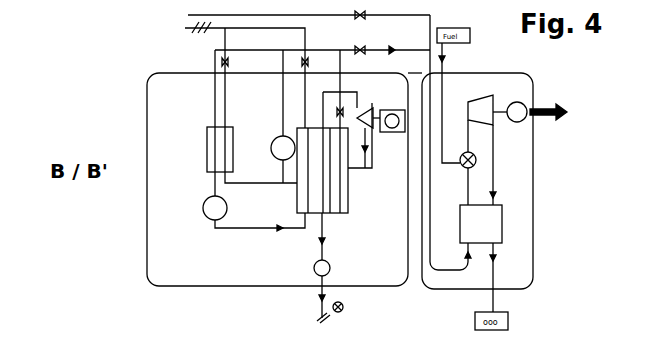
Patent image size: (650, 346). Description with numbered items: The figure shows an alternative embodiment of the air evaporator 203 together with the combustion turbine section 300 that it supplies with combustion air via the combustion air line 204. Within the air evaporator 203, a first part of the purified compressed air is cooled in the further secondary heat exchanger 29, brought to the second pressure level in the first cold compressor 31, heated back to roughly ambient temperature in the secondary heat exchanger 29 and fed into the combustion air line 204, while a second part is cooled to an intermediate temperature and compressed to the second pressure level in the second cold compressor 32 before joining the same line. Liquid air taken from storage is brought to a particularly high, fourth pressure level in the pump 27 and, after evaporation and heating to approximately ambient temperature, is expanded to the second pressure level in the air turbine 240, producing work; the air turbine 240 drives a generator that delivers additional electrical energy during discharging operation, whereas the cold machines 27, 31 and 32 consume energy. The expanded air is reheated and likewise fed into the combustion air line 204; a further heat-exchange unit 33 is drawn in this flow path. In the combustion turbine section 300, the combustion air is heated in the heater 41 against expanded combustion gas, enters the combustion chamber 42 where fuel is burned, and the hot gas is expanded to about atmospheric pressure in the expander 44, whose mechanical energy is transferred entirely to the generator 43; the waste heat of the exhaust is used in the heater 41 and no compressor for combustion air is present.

The air evaporator 203 is at (244, 287).
The combustion air line 204 is at (428, 55).
The gas turbine unit 300 is at (507, 72).
The air turbine 240 is at (373, 105).
The further secondary heat exchanger 29 is at (217, 156).
The first cold compressor 31 is at (254, 213).
The second cold compressor 32 is at (283, 148).
The heat exchanger 33 is at (322, 170).
The pump 27 is at (321, 268).
The heater 41 is at (481, 224).
The combustion chamber 42 is at (473, 162).
The generator 43 is at (530, 123).
The expander 44 is at (482, 150).